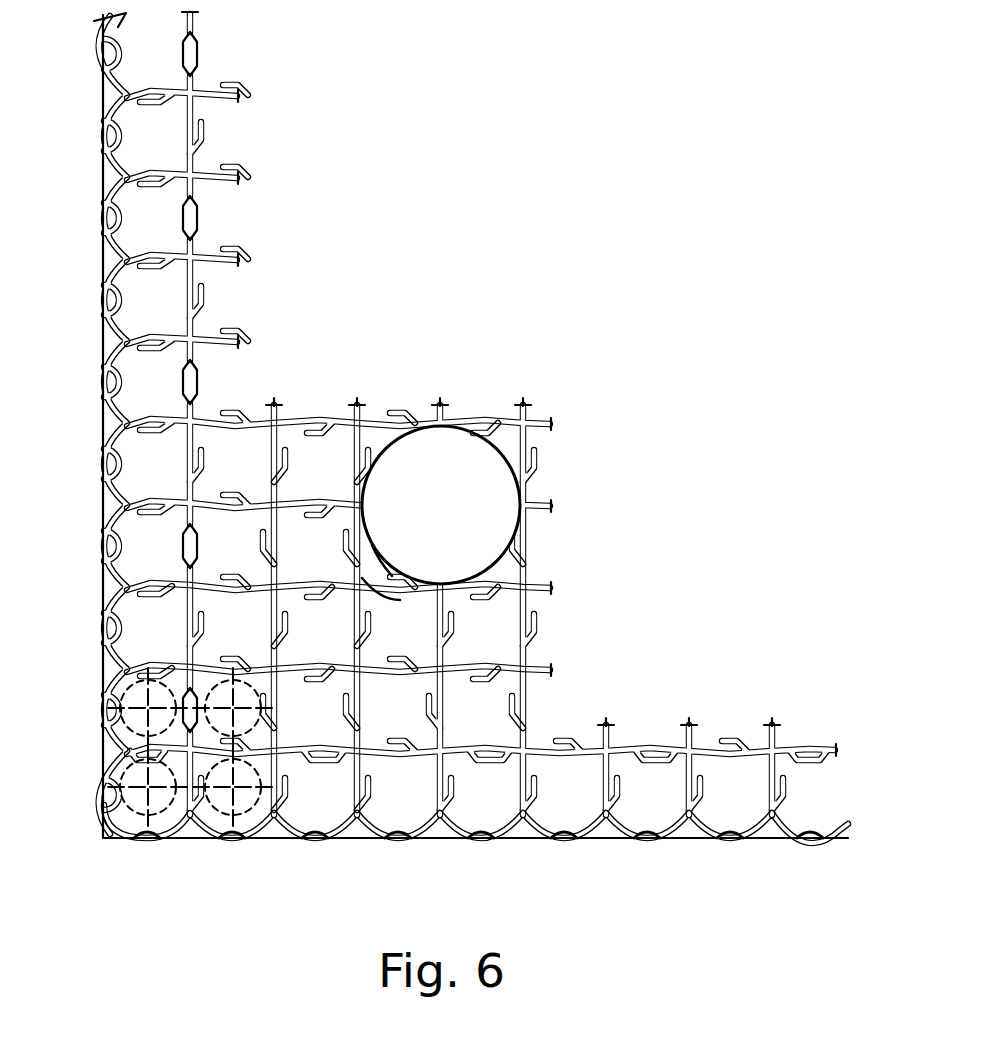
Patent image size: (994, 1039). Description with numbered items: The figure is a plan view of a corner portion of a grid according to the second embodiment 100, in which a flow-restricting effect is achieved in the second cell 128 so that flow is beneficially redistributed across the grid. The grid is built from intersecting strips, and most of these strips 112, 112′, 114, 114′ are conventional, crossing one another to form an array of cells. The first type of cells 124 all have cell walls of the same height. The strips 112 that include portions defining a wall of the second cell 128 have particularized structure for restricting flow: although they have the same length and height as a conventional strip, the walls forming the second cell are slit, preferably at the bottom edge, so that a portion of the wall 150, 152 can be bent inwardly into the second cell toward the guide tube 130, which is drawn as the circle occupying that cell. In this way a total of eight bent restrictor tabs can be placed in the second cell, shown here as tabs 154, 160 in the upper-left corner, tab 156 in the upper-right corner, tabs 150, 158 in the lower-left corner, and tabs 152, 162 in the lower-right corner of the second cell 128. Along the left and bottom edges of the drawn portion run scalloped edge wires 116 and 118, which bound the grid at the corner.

The second embodiment 100 is at (488, 276).
The strip 112 is at (150, 658).
The strip 112′ is at (153, 573).
The strip 114 is at (280, 768).
The strip 114′ is at (360, 770).
The side edge scalloped wire 116 is at (112, 262).
The bottom edge scalloped wire 118 is at (690, 830).
The first type of cell 124 is at (507, 685).
The second cell 128 is at (462, 432).
The guide tube 130 is at (498, 497).
The wall portion 150 is at (380, 592).
The wall portion 152 is at (498, 573).
The bent restrictor tab 154 is at (378, 428).
The bent restrictor tab 156 is at (458, 472).
The bent restrictor tab 158 is at (372, 545).
The bent restrictor tab 160 is at (357, 440).
The bent restrictor tab 162 is at (520, 547).